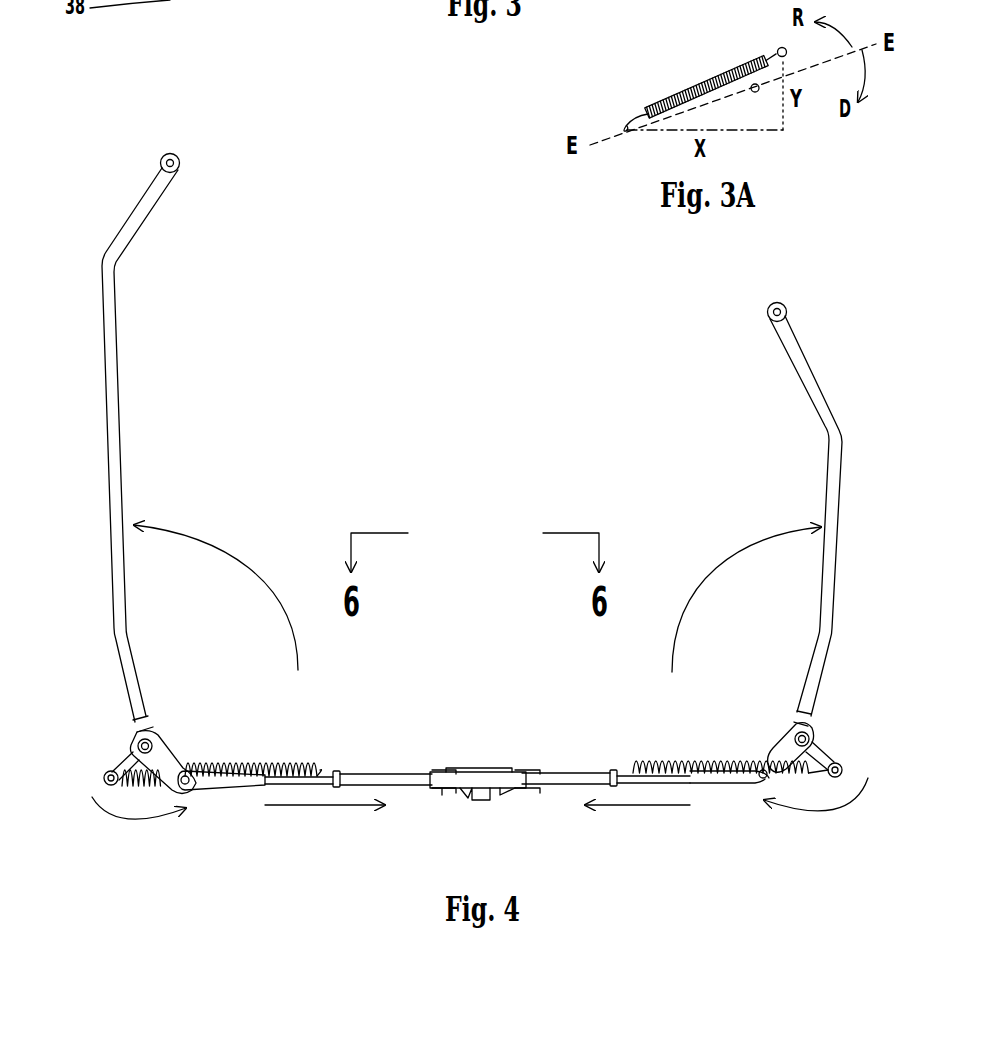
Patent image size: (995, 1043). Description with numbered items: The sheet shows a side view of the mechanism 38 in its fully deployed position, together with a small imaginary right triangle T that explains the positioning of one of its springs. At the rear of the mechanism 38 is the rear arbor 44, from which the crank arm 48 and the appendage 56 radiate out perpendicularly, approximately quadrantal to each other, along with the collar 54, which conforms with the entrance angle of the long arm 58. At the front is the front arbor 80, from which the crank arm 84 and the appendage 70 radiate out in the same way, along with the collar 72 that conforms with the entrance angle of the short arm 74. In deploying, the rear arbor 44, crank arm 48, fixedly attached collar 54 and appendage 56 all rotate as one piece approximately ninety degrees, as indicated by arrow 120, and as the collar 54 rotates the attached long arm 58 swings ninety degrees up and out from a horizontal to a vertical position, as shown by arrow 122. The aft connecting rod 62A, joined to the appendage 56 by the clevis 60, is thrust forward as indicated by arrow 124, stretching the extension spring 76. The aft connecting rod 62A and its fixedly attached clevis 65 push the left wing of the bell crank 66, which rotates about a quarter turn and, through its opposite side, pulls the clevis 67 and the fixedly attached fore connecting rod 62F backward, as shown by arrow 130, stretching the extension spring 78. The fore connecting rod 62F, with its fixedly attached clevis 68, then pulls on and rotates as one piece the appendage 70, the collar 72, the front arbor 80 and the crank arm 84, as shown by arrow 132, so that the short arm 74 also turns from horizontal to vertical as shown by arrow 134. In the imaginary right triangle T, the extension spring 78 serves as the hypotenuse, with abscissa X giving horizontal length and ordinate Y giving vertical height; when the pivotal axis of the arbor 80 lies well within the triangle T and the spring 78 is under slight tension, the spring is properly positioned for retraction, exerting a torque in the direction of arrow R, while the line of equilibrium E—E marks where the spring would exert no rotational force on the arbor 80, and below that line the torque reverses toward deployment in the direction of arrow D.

In FIG. 4, the mechanism 38 is at (178, 134).
In FIG. 4, the long arm 58 is at (128, 228).
In FIG. 4, the short arm 74 is at (808, 368).
In FIG. 4, the collar 54 is at (153, 737).
In FIG. 4, the collar 72 is at (797, 712).
In FIG. 4, the rear arbor 44 is at (156, 738).
In FIG. 4, the appendage 70 is at (778, 752).
In FIG. 4, the crank arm 48 is at (118, 767).
In FIG. 4, the crank arm 84 is at (820, 753).
In FIG. 4, the appendage 56 is at (176, 764).
In FIG. 4, the clevis 60 is at (216, 790).
In FIG. 4, the clevis 68 is at (740, 783).
In FIG. 4, the extension spring 76 is at (296, 767).
In FIG. 3A, the extension spring 78 is at (721, 70).
In FIG. 4, the extension spring 78 is at (640, 763).
In FIG. 3A, the front arbor 80 is at (755, 92).
In FIG. 4, the front arbor 80 is at (796, 735).
In FIG. 4, the aft connecting rod 62A is at (391, 772).
In FIG. 4, the fore connecting rod 62F is at (561, 772).
In FIG. 4, the clevis 65 is at (512, 790).
In FIG. 4, the bell crank 66 is at (486, 800).
In FIG. 4, the clevis 67 is at (445, 791).
In FIG. 4, the arrow 120 is at (139, 826).
In FIG. 4, the arrow 122 is at (216, 593).
In FIG. 4, the arrow 124 is at (325, 821).
In FIG. 4, the arrow 130 is at (637, 821).
In FIG. 4, the arrow 132 is at (816, 809).
In FIG. 4, the arrow 134 is at (746, 599).
In FIG. 3A, the imaginary right triangle T is at (688, 77).